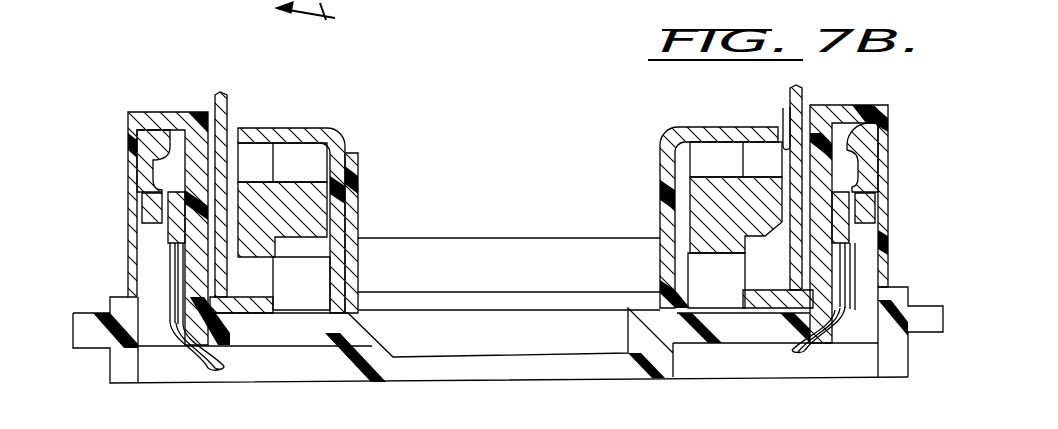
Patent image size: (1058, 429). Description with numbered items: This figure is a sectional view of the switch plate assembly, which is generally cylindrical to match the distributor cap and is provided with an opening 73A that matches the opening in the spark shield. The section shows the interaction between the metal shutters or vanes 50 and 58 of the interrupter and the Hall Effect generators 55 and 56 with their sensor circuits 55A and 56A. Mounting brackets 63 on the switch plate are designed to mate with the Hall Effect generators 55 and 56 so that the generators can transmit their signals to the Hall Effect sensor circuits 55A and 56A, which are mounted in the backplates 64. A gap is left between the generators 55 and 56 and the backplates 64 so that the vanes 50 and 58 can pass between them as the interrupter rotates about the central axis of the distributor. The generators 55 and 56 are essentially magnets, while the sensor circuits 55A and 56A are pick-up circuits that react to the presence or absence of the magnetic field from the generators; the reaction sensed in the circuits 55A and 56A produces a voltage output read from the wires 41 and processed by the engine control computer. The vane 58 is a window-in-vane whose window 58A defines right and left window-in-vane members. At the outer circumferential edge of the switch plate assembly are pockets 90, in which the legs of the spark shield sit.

The wires 41 is at (214, 370).
The metal shutter or vane 50 is at (222, 91).
The Hall Effect generator 55 is at (303, 205).
The Hall Effect sensor circuit 55A is at (176, 215).
The Hall Effect generator 56 is at (705, 193).
The Hall Effect sensor circuit 56A is at (847, 197).
The window-in-vane 58 is at (803, 97).
The window 58A is at (783, 112).
The mounting bracket 63 is at (291, 128).
The backplate 64 is at (153, 108).
The opening 73A is at (622, 323).
The pocket 90 is at (938, 338).